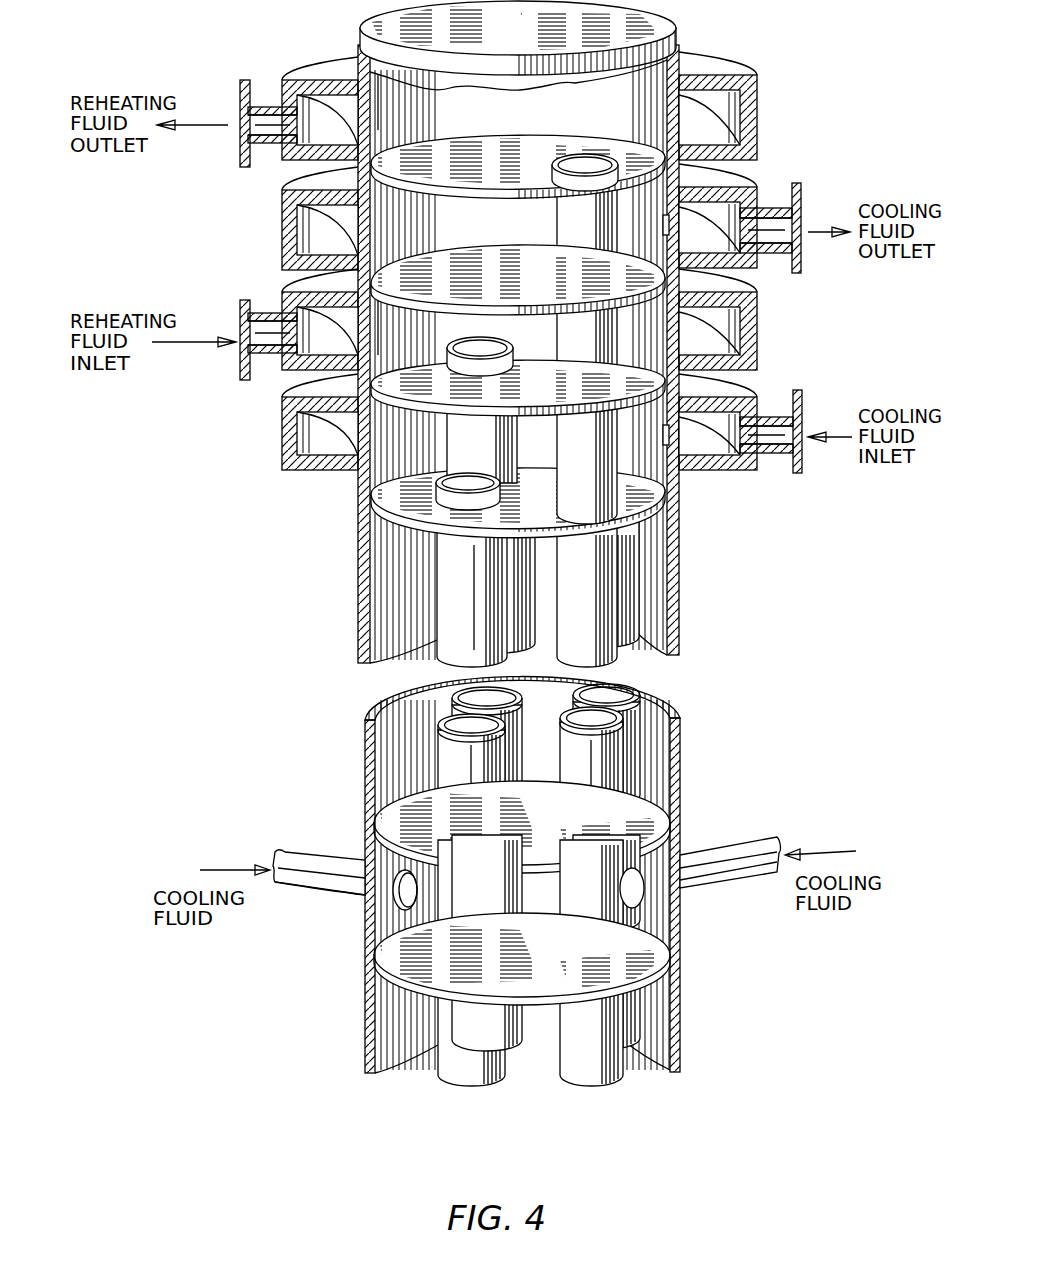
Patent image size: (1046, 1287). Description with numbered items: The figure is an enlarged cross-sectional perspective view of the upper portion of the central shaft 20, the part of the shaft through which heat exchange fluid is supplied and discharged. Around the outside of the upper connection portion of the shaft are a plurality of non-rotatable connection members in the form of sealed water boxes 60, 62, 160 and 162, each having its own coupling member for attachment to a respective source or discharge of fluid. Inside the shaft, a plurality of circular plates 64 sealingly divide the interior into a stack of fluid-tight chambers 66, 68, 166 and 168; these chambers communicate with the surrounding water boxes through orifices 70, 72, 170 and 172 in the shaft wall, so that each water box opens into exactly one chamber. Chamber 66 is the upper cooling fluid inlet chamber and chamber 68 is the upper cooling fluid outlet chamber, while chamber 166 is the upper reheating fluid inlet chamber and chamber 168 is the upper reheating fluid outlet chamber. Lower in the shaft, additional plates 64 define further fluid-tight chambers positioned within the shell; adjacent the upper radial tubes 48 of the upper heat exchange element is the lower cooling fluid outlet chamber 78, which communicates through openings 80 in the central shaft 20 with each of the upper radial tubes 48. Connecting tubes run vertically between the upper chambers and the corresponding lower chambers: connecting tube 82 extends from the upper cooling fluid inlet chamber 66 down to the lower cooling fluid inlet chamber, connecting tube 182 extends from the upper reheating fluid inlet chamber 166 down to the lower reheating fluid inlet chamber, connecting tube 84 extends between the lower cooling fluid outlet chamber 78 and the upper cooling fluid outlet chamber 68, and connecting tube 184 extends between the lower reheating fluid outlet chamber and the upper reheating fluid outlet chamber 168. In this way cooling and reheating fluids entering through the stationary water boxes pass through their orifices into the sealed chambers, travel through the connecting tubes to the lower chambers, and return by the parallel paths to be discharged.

The central shaft 20 is at (678, 540).
The upper radial tubes 48 is at (350, 858).
The sealed water box 60 is at (282, 445).
The sealed water box 62 is at (282, 240).
The circular plates 64 is at (418, 505).
The upper cooling fluid inlet chamber 66 is at (548, 451).
The upper cooling fluid outlet chamber 68 is at (523, 237).
The orifice 70 is at (667, 440).
The orifice 72 is at (667, 225).
The lower cooling fluid outlet chamber 78 is at (445, 872).
The openings 80 is at (400, 900).
The connecting tube 82 is at (455, 580).
The connecting tube 84 is at (628, 603).
The sealed water box 160 is at (757, 325).
The sealed water box 162 is at (757, 110).
The upper reheating fluid inlet chamber 166 is at (546, 346).
The upper reheating fluid outlet chamber 168 is at (529, 127).
The orifice 170 is at (382, 338).
The orifice 172 is at (382, 118).
The connecting tube 182 is at (545, 556).
The connecting tube 184 is at (598, 773).